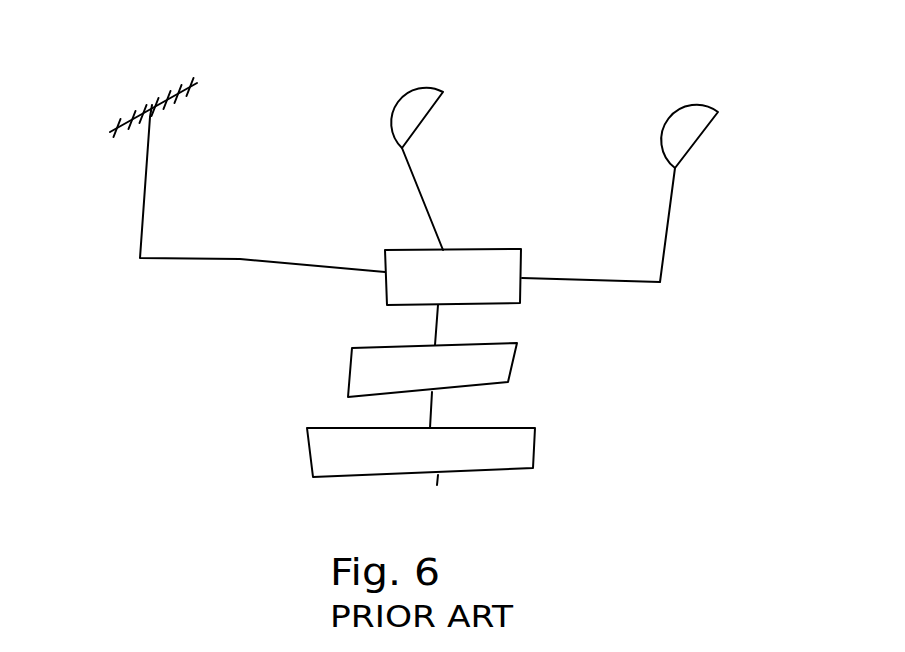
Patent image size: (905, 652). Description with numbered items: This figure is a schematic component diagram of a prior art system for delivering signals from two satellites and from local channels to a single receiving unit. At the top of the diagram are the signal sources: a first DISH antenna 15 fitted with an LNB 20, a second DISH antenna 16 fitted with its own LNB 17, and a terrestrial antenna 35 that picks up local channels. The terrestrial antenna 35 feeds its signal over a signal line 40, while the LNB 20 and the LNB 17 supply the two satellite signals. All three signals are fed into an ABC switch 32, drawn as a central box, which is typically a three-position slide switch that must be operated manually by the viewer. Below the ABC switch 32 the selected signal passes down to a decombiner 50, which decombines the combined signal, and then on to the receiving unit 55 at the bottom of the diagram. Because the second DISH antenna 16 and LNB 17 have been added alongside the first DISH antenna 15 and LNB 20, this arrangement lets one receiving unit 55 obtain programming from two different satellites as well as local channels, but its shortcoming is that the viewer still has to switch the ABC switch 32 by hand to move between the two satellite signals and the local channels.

The terrestrial antenna 35 is at (138, 105).
The signal line 40 is at (138, 237).
The LNB 20 is at (397, 126).
The DISH antenna 15 is at (450, 100).
The ABC switch 32 is at (493, 250).
The LNB 17 is at (668, 142).
The second DISH antenna 16 is at (728, 132).
The decombiner 50 is at (518, 358).
The receiving unit 55 is at (537, 447).